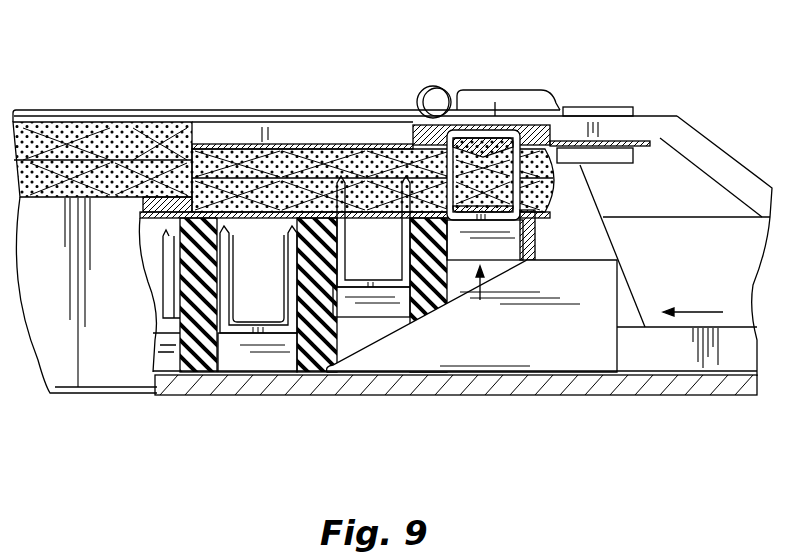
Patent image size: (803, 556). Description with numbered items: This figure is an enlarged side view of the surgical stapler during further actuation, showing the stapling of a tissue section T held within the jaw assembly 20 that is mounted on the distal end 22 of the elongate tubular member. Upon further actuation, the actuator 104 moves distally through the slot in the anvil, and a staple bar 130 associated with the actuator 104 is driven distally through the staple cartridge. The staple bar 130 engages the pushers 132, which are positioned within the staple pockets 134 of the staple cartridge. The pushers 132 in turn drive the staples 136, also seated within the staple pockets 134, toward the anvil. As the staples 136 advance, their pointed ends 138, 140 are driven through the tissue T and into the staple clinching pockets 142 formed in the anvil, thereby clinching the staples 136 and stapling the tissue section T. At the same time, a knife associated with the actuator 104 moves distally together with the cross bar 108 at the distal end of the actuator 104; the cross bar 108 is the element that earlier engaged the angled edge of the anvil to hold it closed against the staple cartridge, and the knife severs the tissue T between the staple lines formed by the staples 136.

The tissue T is at (65, 138).
The jaw assembly 20 is at (137, 116).
The distal end 22 is at (110, 373).
The actuator 104 is at (672, 238).
The cross bar 108 is at (418, 99).
The staple bar 130 is at (533, 355).
The pushers 132 is at (502, 253).
The staple pockets 134 is at (252, 303).
The staples 136 is at (277, 330).
The pointed end 138 is at (258, 187).
The pointed end 140 is at (293, 213).
The staple clinching pockets 142 is at (455, 118).